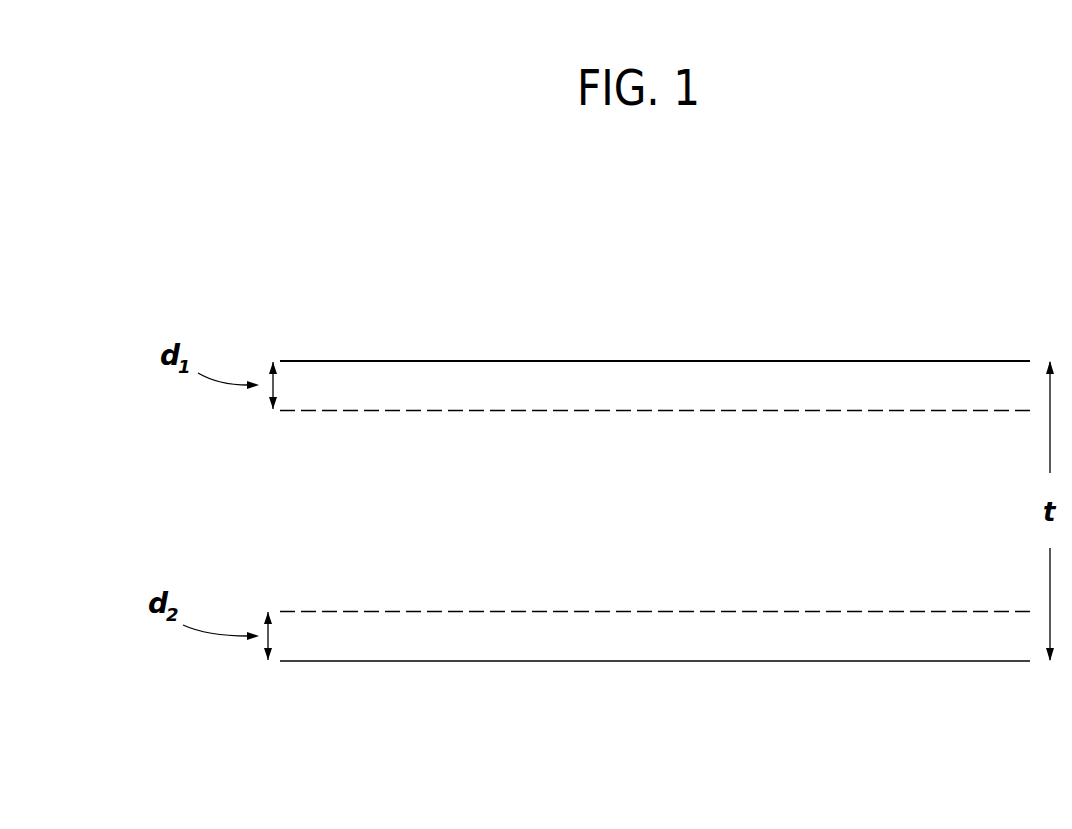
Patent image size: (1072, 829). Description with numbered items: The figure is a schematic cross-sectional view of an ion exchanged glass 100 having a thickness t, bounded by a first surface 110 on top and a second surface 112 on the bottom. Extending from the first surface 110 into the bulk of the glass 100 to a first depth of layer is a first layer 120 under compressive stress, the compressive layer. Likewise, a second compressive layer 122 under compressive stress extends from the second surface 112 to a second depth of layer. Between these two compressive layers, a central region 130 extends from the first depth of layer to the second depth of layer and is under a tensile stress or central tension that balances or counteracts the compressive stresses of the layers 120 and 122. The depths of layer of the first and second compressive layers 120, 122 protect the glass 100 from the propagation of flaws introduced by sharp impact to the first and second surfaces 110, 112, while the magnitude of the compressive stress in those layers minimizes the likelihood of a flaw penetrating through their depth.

The glass 100 is at (665, 230).
The first surface 110 is at (782, 350).
The second surface 112 is at (768, 672).
The first layer 120 is at (418, 375).
The second compressive layer 122 is at (432, 648).
The central region 130 is at (293, 512).